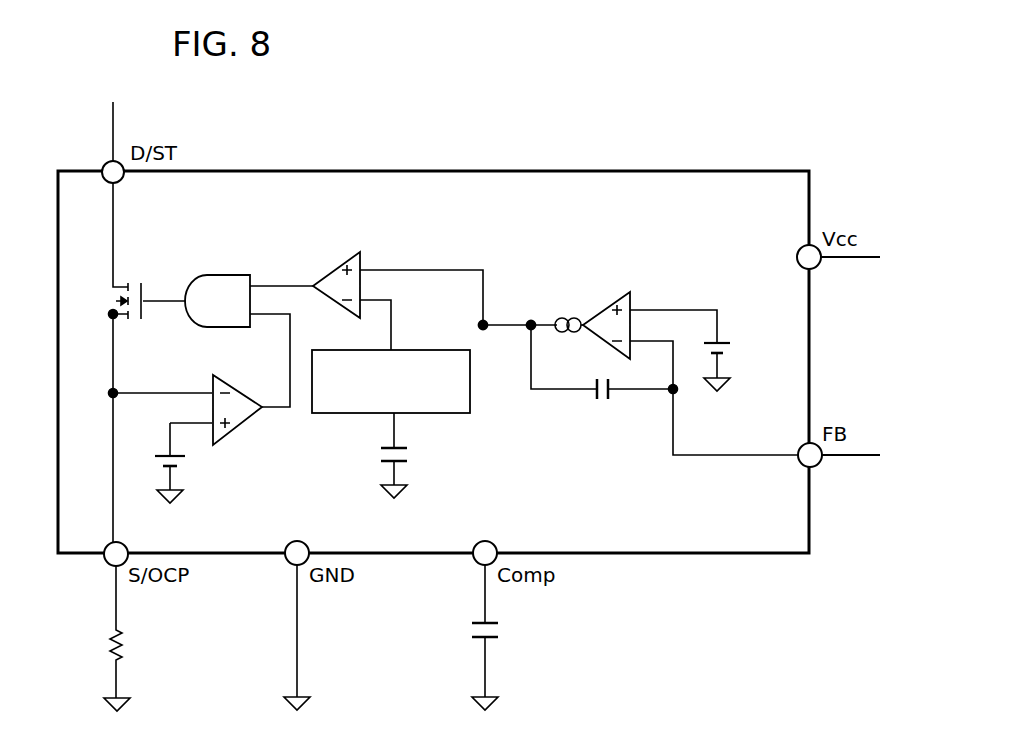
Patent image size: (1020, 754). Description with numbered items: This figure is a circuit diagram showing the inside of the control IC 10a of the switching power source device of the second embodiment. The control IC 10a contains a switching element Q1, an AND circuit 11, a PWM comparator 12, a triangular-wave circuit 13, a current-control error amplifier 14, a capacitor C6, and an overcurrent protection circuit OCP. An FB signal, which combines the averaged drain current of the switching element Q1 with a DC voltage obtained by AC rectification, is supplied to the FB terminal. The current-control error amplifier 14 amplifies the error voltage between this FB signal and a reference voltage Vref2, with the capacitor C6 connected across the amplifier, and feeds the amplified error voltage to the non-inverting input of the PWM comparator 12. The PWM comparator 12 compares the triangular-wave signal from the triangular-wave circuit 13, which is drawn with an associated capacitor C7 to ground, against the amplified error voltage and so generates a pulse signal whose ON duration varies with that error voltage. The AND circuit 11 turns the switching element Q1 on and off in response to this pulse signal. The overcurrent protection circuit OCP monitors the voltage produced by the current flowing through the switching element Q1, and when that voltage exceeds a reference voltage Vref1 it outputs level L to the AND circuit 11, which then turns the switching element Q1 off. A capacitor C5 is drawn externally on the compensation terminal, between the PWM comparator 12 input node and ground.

The control IC 10a is at (432, 170).
The AND circuit 11 is at (213, 275).
The PWM comparator 12 is at (340, 262).
The triangular-wave circuit 13 is at (425, 350).
The current-control error amplifier 14 is at (617, 300).
The switching element Q1 is at (109, 362).
The overcurrent protection circuit OCP is at (240, 425).
The reference voltage Vref1 is at (195, 479).
The reference voltage Vref2 is at (746, 366).
The compensation capacitor C5 is at (499, 637).
The capacitor C6 is at (604, 375).
The triangular wave capacitor C7 is at (407, 455).